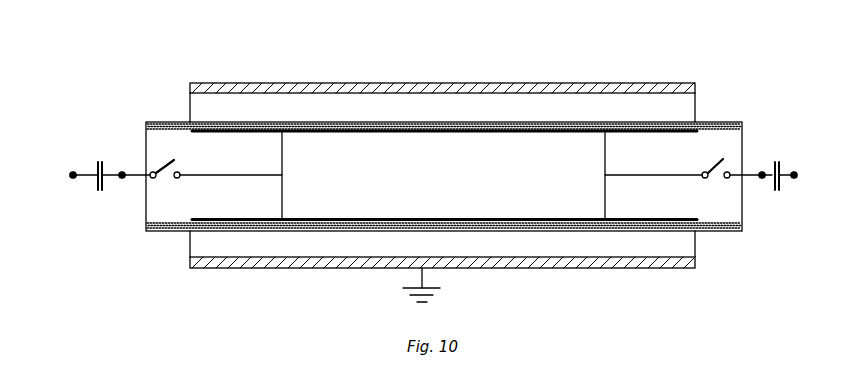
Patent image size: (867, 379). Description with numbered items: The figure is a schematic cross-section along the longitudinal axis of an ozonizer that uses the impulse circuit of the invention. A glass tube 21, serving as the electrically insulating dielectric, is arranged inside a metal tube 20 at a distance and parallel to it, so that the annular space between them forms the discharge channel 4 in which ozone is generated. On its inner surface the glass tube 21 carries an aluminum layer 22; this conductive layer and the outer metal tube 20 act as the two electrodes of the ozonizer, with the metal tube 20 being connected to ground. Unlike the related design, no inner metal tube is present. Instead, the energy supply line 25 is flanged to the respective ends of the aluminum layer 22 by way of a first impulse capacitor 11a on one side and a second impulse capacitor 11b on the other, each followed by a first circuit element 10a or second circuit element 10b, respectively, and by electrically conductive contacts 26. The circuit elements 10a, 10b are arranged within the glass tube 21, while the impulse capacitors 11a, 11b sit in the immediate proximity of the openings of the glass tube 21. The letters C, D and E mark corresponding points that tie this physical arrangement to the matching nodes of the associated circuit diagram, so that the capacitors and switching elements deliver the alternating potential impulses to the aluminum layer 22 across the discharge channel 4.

The discharge channel 4 is at (510, 105).
The metal tube 20 is at (227, 88).
The glass tube 21 is at (368, 124).
The aluminum layer 22 is at (447, 124).
The energy supply line 25 is at (223, 177).
The electrically conductive contacts 26 is at (303, 124).
The first circuit element 10a is at (165, 157).
The second circuit element 10b is at (708, 165).
The first impulse capacitor 11a is at (100, 198).
The second impulse capacitor 11b is at (773, 195).
The corresponding point C is at (121, 170).
The corresponding point D is at (793, 170).
The corresponding point E is at (72, 171).